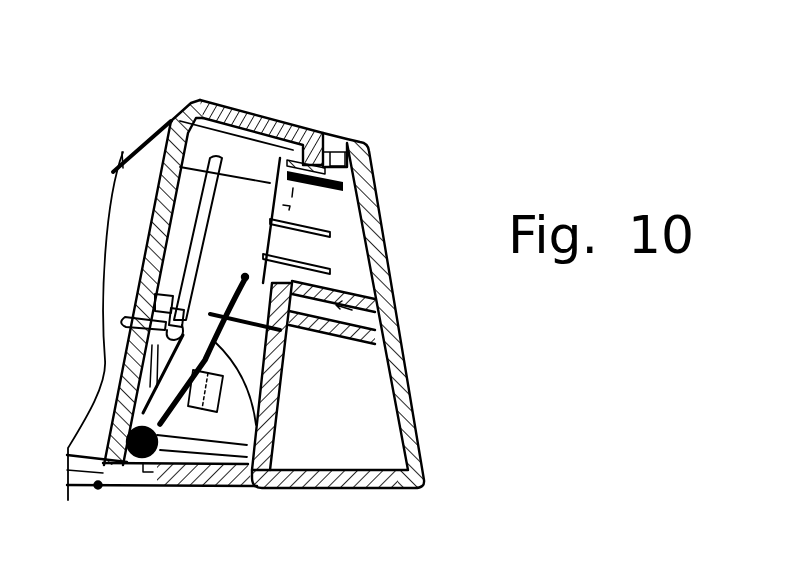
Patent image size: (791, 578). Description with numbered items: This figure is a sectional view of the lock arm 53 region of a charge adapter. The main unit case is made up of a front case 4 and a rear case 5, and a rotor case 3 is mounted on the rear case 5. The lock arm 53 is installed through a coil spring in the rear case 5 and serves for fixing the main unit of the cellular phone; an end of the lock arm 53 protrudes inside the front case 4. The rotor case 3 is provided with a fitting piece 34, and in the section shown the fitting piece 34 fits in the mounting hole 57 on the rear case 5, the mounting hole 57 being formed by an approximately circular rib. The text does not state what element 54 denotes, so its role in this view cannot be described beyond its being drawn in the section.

The rotor case 3 is at (388, 488).
The front case 4 is at (185, 108).
The rear case 5 is at (267, 117).
The fitting piece 34 is at (262, 270).
The lock arm 53 is at (125, 319).
The partition wall 54 is at (273, 474).
The mounting hole 57 is at (397, 319).